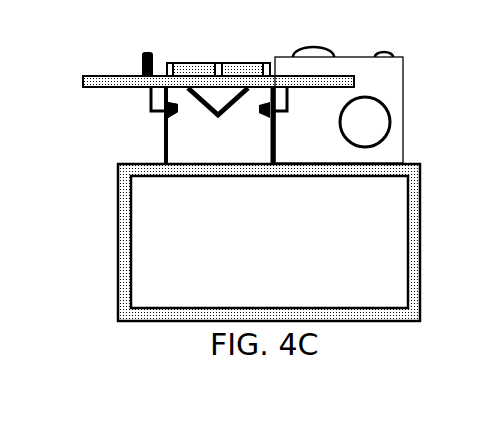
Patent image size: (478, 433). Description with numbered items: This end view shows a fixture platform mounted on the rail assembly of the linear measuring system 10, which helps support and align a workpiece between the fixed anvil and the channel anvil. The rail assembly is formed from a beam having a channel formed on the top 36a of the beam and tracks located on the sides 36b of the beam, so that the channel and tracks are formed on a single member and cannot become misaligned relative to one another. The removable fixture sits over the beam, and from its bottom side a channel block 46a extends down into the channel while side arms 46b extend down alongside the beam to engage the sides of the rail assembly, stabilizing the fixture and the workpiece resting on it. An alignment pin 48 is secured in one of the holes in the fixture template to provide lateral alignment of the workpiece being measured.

The linear measuring system 10 is at (67, 32).
The alignment pin 48 is at (143, 53).
The channel block 46a is at (212, 100).
The side arms 46b is at (152, 101).
The top of the beam 36a is at (150, 105).
The sides of the beam 36b is at (268, 117).